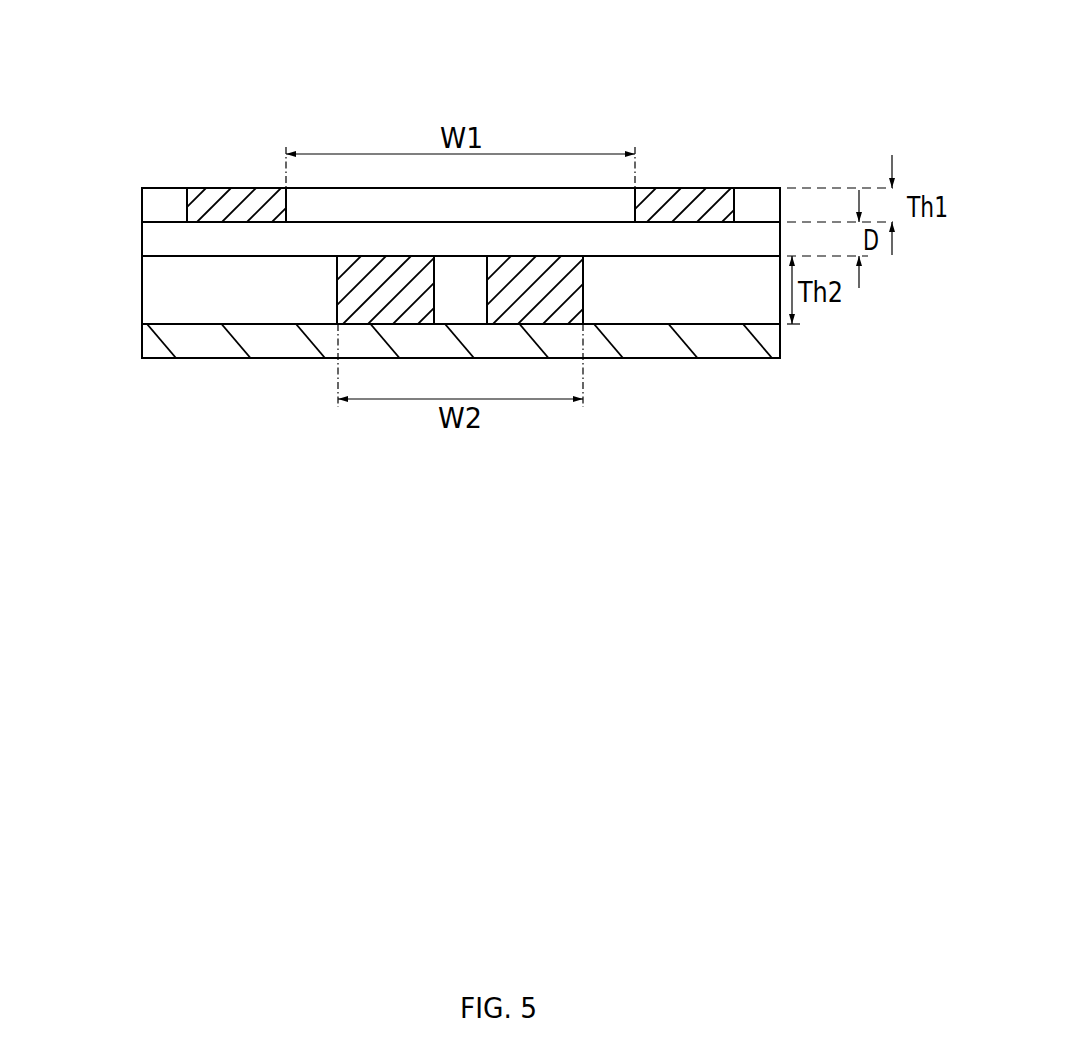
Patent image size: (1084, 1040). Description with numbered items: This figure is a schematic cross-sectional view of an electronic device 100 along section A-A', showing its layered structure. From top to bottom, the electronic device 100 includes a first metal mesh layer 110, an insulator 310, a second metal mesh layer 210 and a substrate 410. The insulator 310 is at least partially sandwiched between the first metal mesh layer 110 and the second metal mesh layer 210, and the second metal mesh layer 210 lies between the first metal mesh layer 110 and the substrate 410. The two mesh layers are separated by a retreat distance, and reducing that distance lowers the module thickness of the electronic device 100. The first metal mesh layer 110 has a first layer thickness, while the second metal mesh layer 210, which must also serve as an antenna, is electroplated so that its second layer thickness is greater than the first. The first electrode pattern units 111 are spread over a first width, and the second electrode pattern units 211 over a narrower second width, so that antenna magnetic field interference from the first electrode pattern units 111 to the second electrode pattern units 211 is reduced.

The electronic device 100 is at (153, 112).
The first metal mesh layer 110 is at (147, 204).
The first electrode pattern units 111 is at (237, 195).
The insulator 310 is at (147, 241).
The second metal mesh layer 210 is at (147, 290).
The second electrode pattern units 211 is at (363, 291).
The substrate 410 is at (147, 339).